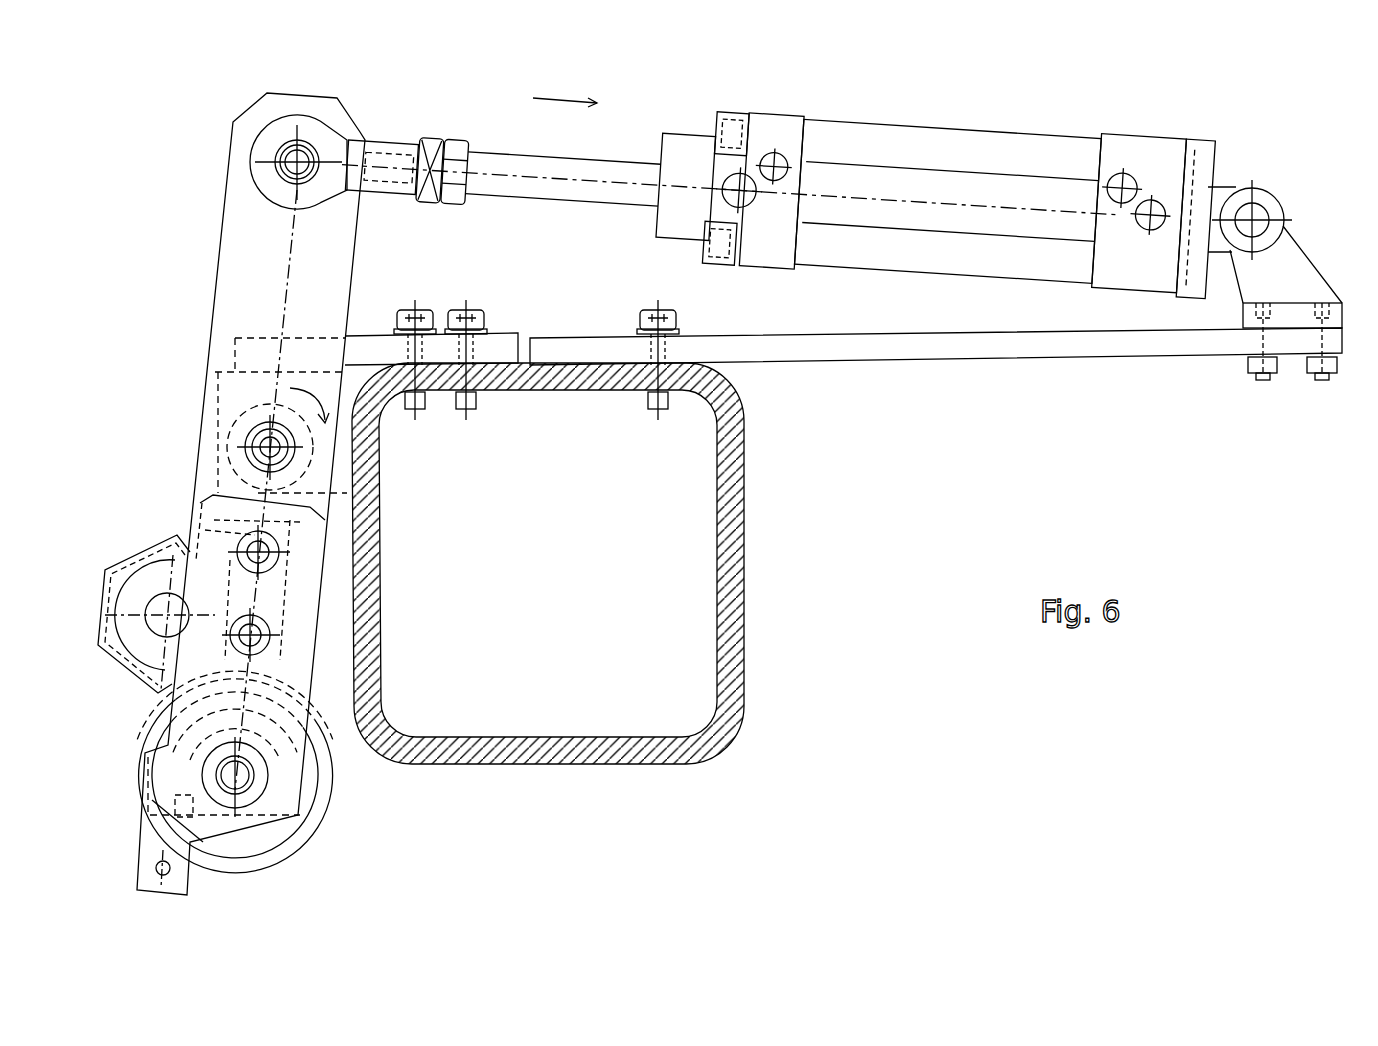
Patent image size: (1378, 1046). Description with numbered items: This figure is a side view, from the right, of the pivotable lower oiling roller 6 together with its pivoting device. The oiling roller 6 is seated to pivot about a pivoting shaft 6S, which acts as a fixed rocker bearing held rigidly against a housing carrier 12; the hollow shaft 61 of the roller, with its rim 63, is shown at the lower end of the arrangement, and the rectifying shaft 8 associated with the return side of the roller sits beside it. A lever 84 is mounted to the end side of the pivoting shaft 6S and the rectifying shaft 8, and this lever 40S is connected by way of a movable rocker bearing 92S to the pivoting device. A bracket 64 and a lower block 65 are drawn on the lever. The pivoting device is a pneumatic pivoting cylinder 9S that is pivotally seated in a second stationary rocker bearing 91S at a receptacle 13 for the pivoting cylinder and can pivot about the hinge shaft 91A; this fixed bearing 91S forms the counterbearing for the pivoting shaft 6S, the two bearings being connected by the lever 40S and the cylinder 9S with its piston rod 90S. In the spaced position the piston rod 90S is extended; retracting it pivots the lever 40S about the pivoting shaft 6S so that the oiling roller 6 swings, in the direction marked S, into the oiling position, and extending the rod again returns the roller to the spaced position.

The pivotable oiling roller 6 is at (313, 850).
The pivoting shaft 6S is at (243, 444).
The swing direction S is at (309, 420).
The rectifying shaft 8 is at (160, 596).
The pneumatic pivoting cylinder 9S is at (933, 220).
The housing carrier 12 is at (727, 735).
The receptacle for the pivoting cylinder 13 is at (938, 357).
The lever 40S is at (403, 195).
The hollow shaft 61 is at (180, 772).
The pulley rim 63 is at (273, 860).
The bracket 64 is at (297, 590).
The lower block 65 is at (177, 880).
The lever 84 is at (242, 300).
The piston rod 90S is at (727, 213).
The hinge shaft 91A is at (1255, 217).
The second stationary rocker bearing 91S is at (1268, 213).
The movable rocker bearing 92S is at (270, 188).